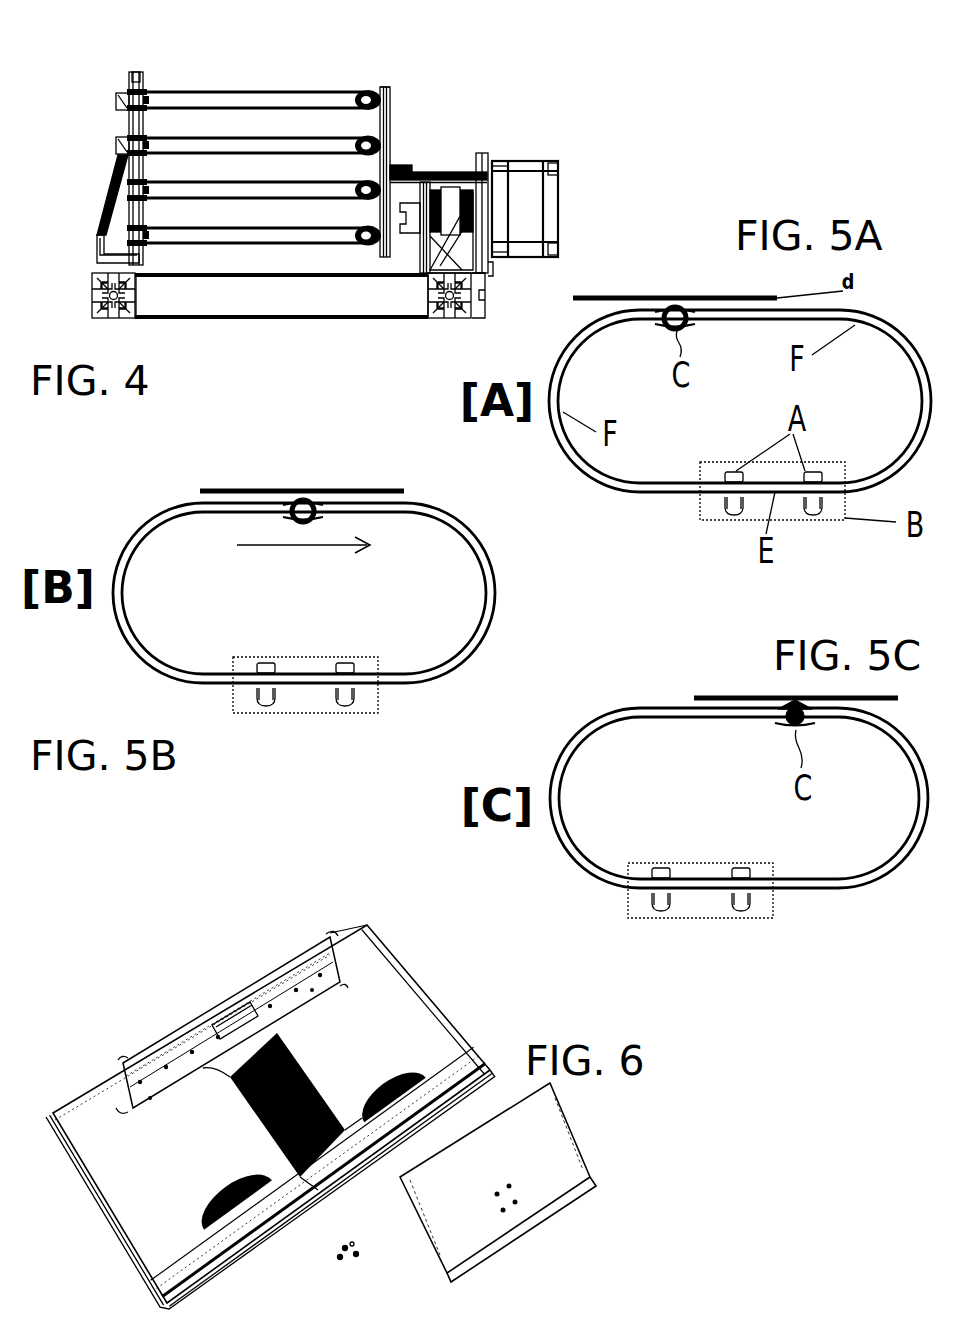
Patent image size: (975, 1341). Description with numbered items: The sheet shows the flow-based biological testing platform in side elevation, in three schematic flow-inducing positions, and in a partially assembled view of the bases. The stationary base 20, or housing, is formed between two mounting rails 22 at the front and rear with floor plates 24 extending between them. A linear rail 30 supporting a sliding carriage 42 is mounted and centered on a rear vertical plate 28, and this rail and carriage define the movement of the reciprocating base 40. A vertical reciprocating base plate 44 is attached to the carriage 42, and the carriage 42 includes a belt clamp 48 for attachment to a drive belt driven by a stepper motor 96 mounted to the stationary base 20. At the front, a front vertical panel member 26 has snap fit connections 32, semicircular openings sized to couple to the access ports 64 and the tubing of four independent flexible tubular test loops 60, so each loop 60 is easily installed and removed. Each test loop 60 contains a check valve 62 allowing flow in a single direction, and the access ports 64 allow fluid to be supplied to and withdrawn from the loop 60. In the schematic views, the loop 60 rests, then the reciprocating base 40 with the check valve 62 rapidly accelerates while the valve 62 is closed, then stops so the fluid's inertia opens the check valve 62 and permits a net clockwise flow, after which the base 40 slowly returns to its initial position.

In FIG. 4, the stationary base 20 is at (85, 323).
In FIG. 5A, the stationary base 20 is at (700, 505).
In FIG. 5B, the stationary base 20 is at (378, 700).
In FIG. 5C, the stationary base 20 is at (775, 905).
In FIG. 4, the mounting rails 22 is at (118, 318).
In FIG. 4, the floor plates 24 is at (297, 280).
In FIG. 6, the floor plates 24 is at (358, 1044).
In FIG. 4, the front vertical panel member 26 is at (145, 212).
In FIG. 4, the rear vertical plate 28 is at (417, 258).
In FIG. 6, the linear rail 30 is at (250, 993).
In FIG. 4, the snap fit connections 32 is at (143, 90).
In FIG. 4, the reciprocating base 40 is at (412, 49).
In FIG. 5A, the reciprocating base 40 is at (690, 296).
In FIG. 5B, the reciprocating base 40 is at (264, 490).
In FIG. 5C, the reciprocating base 40 is at (756, 696).
In FIG. 4, the sliding carriage 42 is at (440, 175).
In FIG. 4, the vertical reciprocating base plate 44 is at (392, 145).
In FIG. 6, the vertical reciprocating base plate 44 is at (503, 1163).
In FIG. 4, the belt clamp 48 is at (465, 200).
In FIG. 4, the flexible tubular test loop 60 is at (173, 140).
In FIG. 5A, the flexible tubular test loop 60 is at (900, 352).
In FIG. 5B, the flexible tubular test loop 60 is at (125, 605).
In FIG. 5C, the flexible tubular test loop 60 is at (562, 795).
In FIG. 5A, the check valve 62 is at (688, 330).
In FIG. 5B, the check valve 62 is at (316, 519).
In FIG. 5C, the check valve 62 is at (820, 730).
In FIG. 5A, the access ports 64 is at (726, 467).
In FIG. 5B, the access ports 64 is at (266, 660).
In FIG. 5C, the access ports 64 is at (665, 892).
In FIG. 4, the stepper motor 96 is at (553, 212).